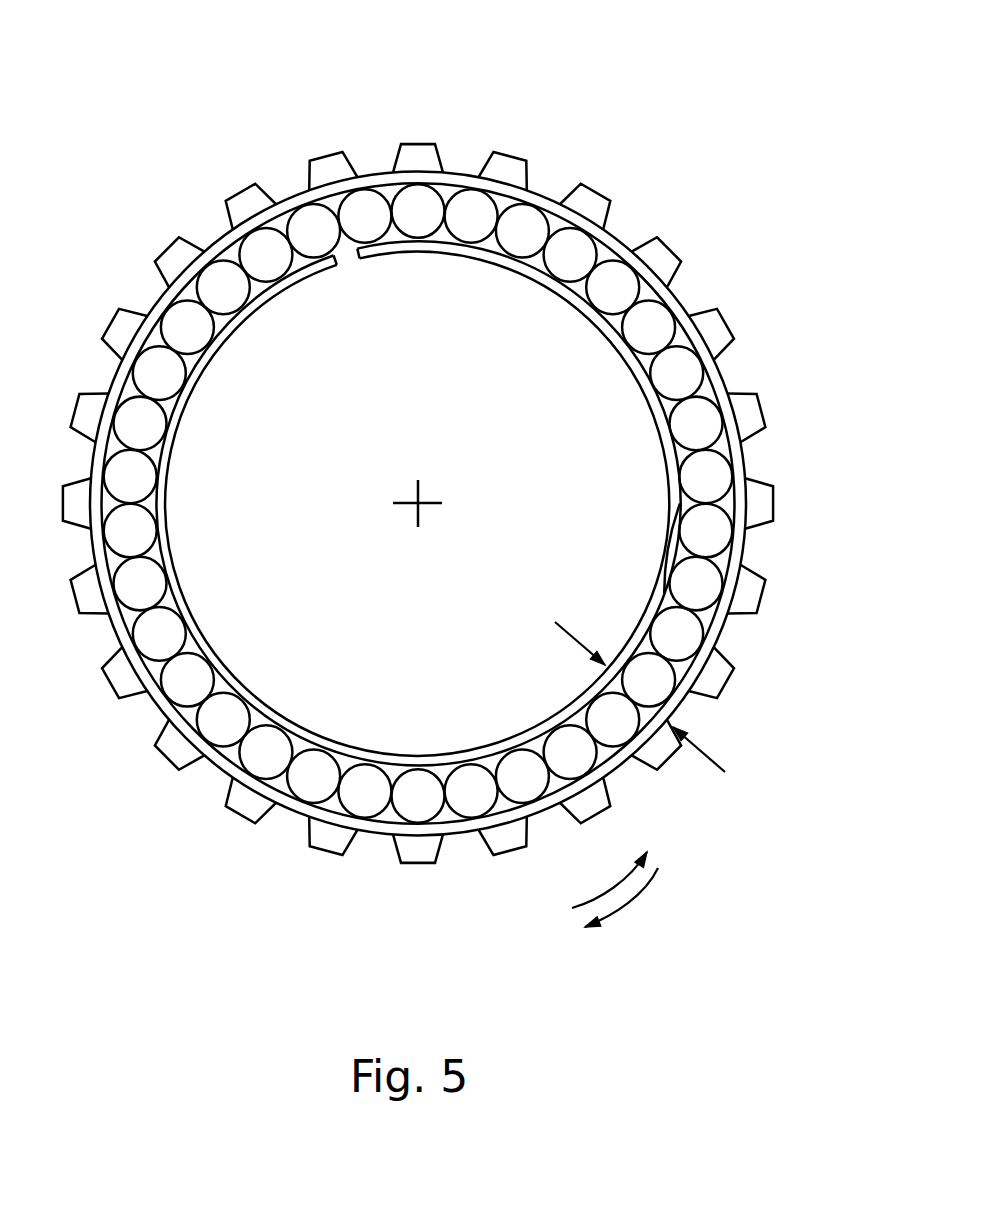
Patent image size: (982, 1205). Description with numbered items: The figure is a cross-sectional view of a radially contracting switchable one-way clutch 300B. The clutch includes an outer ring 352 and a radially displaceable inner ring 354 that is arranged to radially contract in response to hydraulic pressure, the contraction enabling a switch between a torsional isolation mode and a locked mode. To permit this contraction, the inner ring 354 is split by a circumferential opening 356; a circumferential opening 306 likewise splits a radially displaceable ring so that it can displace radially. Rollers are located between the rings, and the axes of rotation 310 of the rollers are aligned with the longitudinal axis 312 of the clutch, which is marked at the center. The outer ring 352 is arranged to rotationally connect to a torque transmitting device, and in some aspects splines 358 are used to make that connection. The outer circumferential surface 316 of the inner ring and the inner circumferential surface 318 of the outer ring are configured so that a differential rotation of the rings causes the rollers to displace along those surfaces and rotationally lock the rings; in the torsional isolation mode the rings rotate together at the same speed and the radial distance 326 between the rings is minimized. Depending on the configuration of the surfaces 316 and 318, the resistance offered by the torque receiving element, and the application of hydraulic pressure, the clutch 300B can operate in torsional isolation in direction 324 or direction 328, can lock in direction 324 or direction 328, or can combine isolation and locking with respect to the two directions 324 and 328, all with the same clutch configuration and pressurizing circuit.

The switchable one-way clutch 300B is at (683, 170).
The outer ring 352 is at (542, 190).
The splines 358 is at (332, 838).
The inner circumferential surface 318 is at (605, 245).
The inner ring 354 is at (680, 497).
The circumferential opening 356 is at (348, 250).
The outer circumferential surface 316 is at (682, 553).
The axes of rotation 310 is at (183, 332).
The circumferential opening 306 is at (153, 638).
The longitudinal axis 312 is at (430, 496).
The radial distance 326 is at (700, 752).
The direction 328 is at (605, 895).
The direction 324 is at (630, 908).